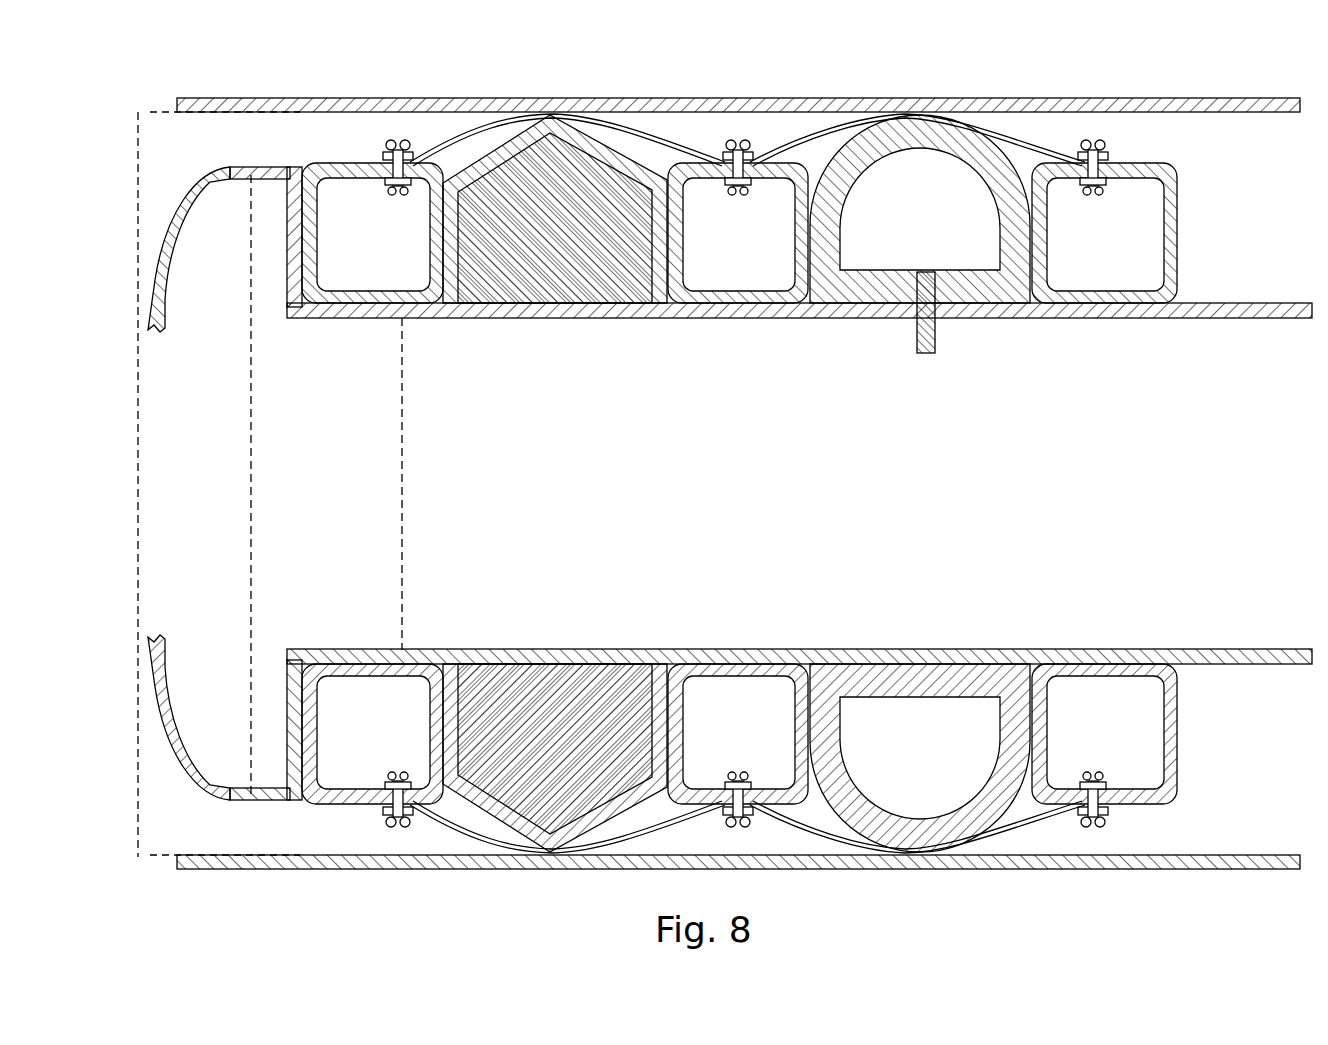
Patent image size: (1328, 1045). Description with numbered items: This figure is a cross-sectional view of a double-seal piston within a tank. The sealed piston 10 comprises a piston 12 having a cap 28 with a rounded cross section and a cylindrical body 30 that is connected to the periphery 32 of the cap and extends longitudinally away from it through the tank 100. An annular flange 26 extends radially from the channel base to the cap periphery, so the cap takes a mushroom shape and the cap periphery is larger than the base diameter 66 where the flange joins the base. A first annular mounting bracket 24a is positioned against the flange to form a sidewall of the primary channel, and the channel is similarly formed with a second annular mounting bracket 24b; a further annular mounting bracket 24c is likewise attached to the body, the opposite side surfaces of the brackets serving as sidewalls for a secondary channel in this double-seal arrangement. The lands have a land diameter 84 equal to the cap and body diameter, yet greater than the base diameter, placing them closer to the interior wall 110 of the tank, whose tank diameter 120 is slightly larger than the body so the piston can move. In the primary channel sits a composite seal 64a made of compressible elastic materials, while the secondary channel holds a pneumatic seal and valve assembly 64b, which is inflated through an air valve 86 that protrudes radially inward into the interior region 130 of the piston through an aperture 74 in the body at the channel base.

The sealed piston 10 is at (160, 81).
The piston 12 is at (178, 151).
The first annular mounting bracket 24a is at (330, 170).
The second annular mounting bracket 24b is at (793, 167).
The annular mounting bracket 24c is at (1125, 167).
The annular flange 26 is at (290, 230).
The cap 28 is at (165, 233).
The cylindrical body 30 is at (775, 318).
The periphery of the cap 32 is at (262, 172).
The composite seal 64a is at (527, 198).
The pneumatic seal and valve assembly 64b is at (917, 197).
The base diameter 66 is at (400, 590).
The aperture 74 is at (937, 318).
The land diameter 84 is at (252, 590).
The air valve 86 is at (935, 345).
The tank 100 is at (358, 108).
The interior wall of the tank 110 is at (1163, 858).
The diameter of the tank 120 is at (138, 605).
The interior region of the piston 130 is at (449, 446).